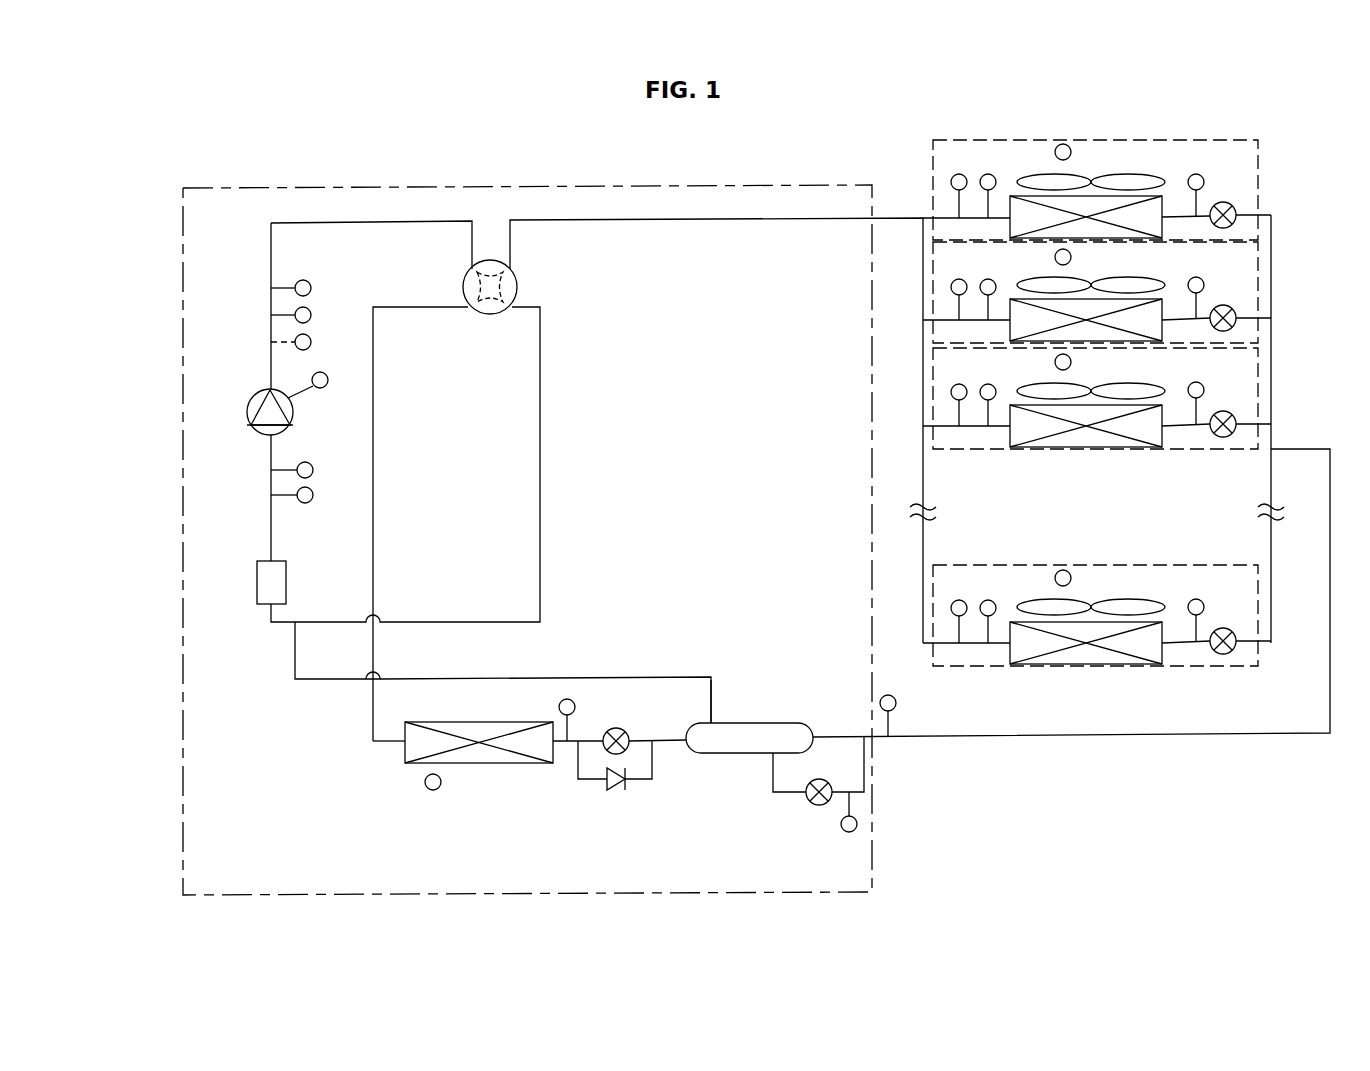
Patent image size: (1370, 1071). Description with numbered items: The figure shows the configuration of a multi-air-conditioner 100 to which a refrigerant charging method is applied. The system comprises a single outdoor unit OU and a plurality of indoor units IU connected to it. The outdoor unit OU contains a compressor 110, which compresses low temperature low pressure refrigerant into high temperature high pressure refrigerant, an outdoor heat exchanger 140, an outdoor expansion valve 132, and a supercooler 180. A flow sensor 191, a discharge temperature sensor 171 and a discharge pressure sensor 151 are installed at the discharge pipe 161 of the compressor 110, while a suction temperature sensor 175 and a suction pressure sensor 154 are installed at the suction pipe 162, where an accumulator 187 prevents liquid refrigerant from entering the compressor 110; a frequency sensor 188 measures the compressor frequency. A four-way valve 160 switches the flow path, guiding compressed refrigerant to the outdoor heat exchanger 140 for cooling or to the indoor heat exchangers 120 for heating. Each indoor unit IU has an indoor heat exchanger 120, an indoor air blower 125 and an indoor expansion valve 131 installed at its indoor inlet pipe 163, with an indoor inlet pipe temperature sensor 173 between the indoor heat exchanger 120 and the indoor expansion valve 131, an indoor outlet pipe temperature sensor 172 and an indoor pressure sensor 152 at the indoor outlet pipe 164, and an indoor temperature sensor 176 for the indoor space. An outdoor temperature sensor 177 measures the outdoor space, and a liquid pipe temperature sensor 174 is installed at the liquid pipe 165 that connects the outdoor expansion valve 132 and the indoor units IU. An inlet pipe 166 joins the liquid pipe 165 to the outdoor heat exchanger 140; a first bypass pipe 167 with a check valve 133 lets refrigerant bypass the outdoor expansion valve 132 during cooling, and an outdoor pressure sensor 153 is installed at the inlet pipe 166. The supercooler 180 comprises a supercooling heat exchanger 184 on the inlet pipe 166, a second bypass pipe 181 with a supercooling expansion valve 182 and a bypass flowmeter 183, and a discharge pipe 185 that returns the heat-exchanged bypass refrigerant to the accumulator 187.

The multi-air-conditioner 100 is at (1266, 114).
The compressor 110 is at (252, 432).
The indoor heat exchanger 120 is at (1162, 195).
The indoor air blower 125 is at (1127, 172).
The indoor expansion valve 131 is at (1215, 203).
The outdoor expansion valve 132 is at (608, 727).
The check valve 133 is at (617, 792).
The outdoor heat exchanger 140 is at (498, 765).
The discharge pressure sensor 151 is at (311, 342).
The indoor pressure sensor 152 is at (988, 173).
The outdoor pressure sensor 153 is at (572, 698).
The suction pressure sensor 154 is at (313, 495).
The four-way valve 160 is at (518, 287).
The discharge pipe 161 is at (270, 366).
The suction pipe 162 is at (270, 485).
The indoor inlet pipe 163 is at (1250, 214).
The indoor outlet pipe 164 is at (977, 215).
The liquid pipe 165 is at (940, 737).
The inlet pipe 166 is at (667, 730).
The first bypass pipe 167 is at (585, 782).
The discharge temperature sensor 171 is at (311, 315).
The indoor outlet pipe temperature sensor 172 is at (952, 174).
The indoor inlet pipe temperature sensor 173 is at (1198, 172).
The liquid pipe temperature sensor 174 is at (896, 703).
The suction temperature sensor 175 is at (313, 470).
The indoor temperature sensor 176 is at (1062, 143).
The outdoor temperature sensor 177 is at (438, 788).
The supercooler 180 is at (744, 712).
The second bypass pipe 181 is at (780, 795).
The supercooling expansion valve 182 is at (815, 806).
The bypass flowmeter 183 is at (849, 833).
The supercooling heat exchanger 184 is at (717, 755).
The discharge pipe 185 is at (525, 676).
The accumulator 187 is at (257, 585).
The frequency sensor 188 is at (322, 388).
The flow sensor 191 is at (311, 288).
The outdoor unit OU is at (290, 188).
The indoor unit IU is at (1262, 226).